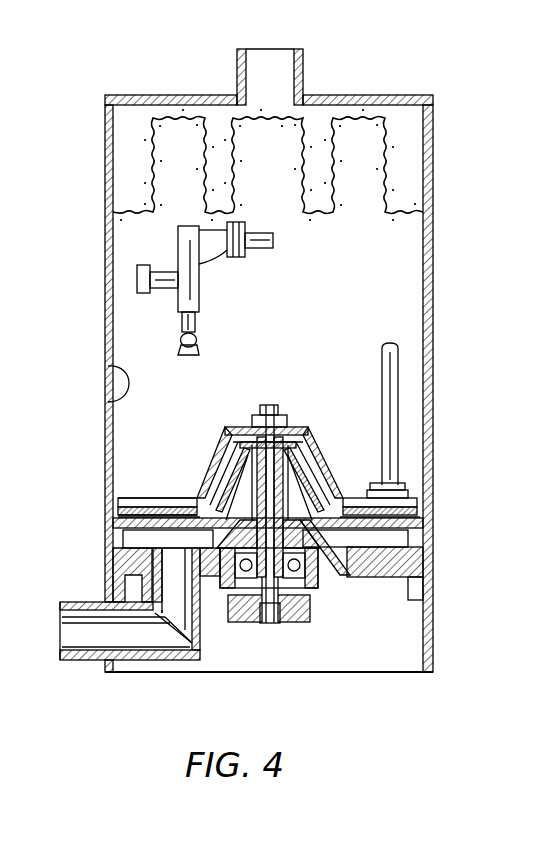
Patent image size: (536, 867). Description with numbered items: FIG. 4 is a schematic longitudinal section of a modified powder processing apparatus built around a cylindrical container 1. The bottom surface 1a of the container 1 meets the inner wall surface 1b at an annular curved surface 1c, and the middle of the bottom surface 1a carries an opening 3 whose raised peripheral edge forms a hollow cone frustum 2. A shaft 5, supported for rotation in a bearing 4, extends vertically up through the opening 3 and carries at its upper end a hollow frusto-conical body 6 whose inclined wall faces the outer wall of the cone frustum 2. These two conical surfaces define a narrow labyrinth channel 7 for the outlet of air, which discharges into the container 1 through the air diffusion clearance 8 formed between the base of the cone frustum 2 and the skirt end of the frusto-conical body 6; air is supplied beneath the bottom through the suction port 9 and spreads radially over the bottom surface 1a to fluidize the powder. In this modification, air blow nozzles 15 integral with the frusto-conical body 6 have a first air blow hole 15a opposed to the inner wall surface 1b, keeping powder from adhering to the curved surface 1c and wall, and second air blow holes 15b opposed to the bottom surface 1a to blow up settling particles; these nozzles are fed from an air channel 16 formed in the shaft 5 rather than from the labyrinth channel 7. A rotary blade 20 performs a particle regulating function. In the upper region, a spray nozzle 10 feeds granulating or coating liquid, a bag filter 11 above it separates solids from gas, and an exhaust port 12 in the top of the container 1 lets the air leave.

The cylindrical container 1 is at (105, 313).
The bottom surface 1a is at (431, 556).
The inner wall surface 1b is at (105, 372).
The annular curved surface 1c is at (433, 532).
The cone frustum 2 is at (315, 445).
The opening 3 is at (243, 515).
The bearing 4 is at (315, 590).
The shaft 5 is at (272, 624).
The frusto-conical body 6 is at (300, 427).
The labyrinth channel 7 is at (220, 457).
The air diffusion clearance 8 is at (180, 532).
The suction port 9 is at (183, 618).
The spray nozzle 10 is at (200, 320).
The bag filter 11 is at (300, 164).
The exhaust port 12 is at (277, 78).
The air blow nozzle 15 is at (164, 498).
The first air blow hole 15a is at (121, 500).
The second air blow hole 15b is at (117, 530).
The air channel 16 is at (346, 540).
The rotary blade 20 is at (407, 481).